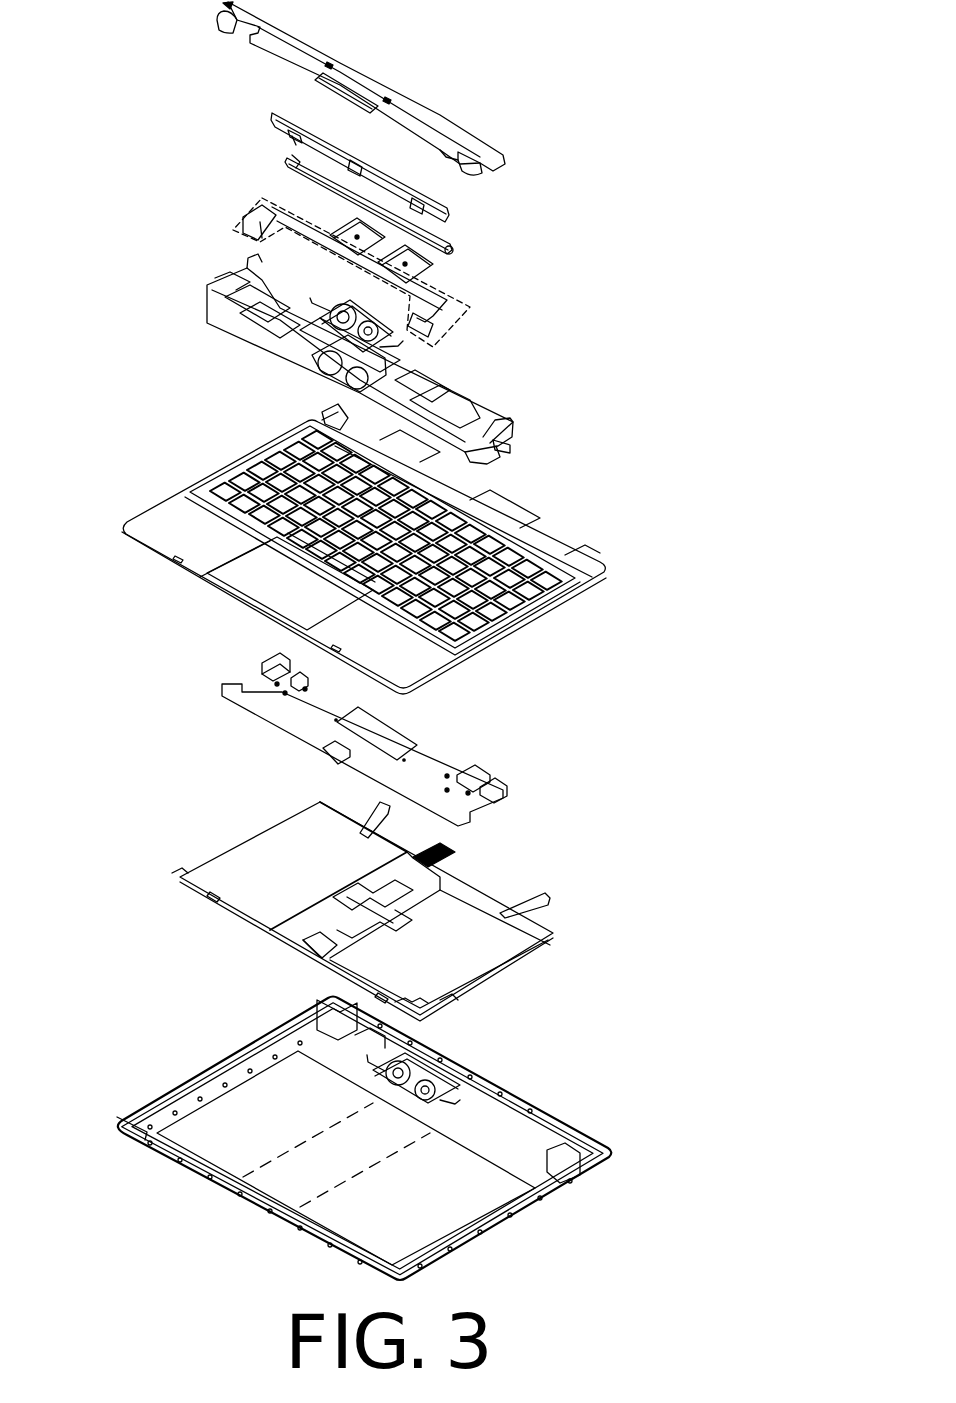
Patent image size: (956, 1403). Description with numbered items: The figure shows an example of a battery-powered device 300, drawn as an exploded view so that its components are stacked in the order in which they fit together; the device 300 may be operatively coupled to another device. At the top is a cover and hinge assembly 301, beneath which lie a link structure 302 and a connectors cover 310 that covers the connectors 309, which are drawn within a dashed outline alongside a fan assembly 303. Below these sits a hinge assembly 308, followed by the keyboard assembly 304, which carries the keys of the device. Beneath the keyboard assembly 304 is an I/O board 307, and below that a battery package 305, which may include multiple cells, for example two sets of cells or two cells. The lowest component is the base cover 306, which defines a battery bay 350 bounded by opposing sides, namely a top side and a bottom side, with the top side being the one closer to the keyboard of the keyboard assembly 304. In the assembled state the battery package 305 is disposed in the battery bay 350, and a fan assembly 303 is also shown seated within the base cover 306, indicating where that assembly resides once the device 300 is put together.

The device 300 is at (126, 28).
The cover and hinge assembly 301 is at (470, 136).
The link structure 302 is at (452, 247).
The fan assembly 303 is at (387, 350).
The keyboard assembly 304 is at (607, 570).
The battery package 305 is at (528, 953).
The base cover 306 is at (197, 1170).
The I/O board 307 is at (233, 700).
The hinge assembly 308 is at (220, 326).
The connectors 309 is at (245, 219).
The connectors cover 310 is at (272, 117).
The battery bay 350 is at (230, 1135).